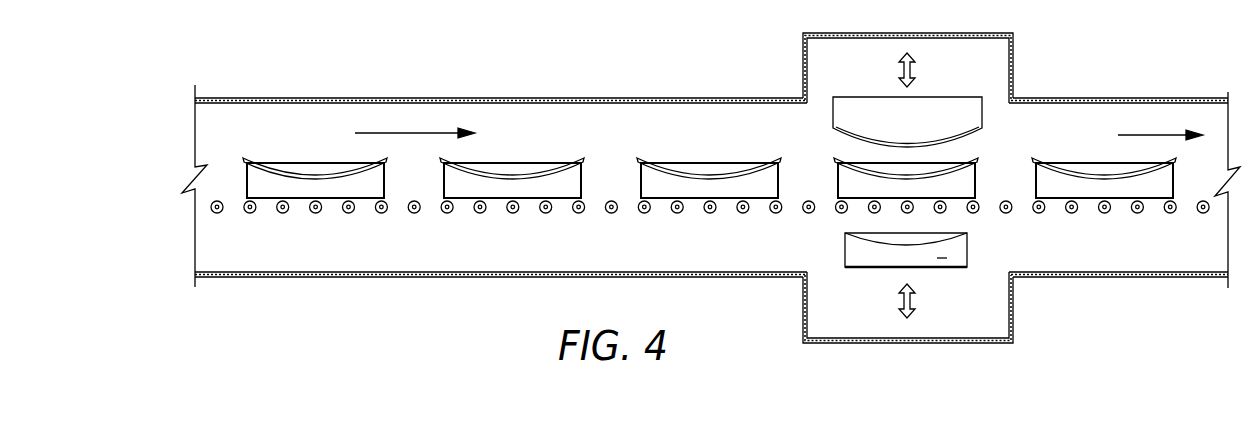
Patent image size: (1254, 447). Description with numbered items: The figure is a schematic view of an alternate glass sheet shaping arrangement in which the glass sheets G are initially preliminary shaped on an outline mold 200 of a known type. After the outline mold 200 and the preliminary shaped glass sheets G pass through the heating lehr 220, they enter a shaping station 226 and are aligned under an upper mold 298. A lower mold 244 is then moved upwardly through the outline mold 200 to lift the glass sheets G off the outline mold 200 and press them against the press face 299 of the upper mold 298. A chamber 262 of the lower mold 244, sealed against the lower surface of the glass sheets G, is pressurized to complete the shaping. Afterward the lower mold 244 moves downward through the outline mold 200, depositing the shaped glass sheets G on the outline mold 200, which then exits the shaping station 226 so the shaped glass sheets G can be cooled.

The glass sheets G is at (307, 176).
The outline mold 200 is at (640, 180).
The heating lehr 220 is at (420, 277).
The shaping station 226 is at (925, 392).
The lower mold 244 is at (878, 267).
The chamber 262 is at (942, 258).
The upper mold 298 is at (877, 104).
The press face 299 is at (848, 138).